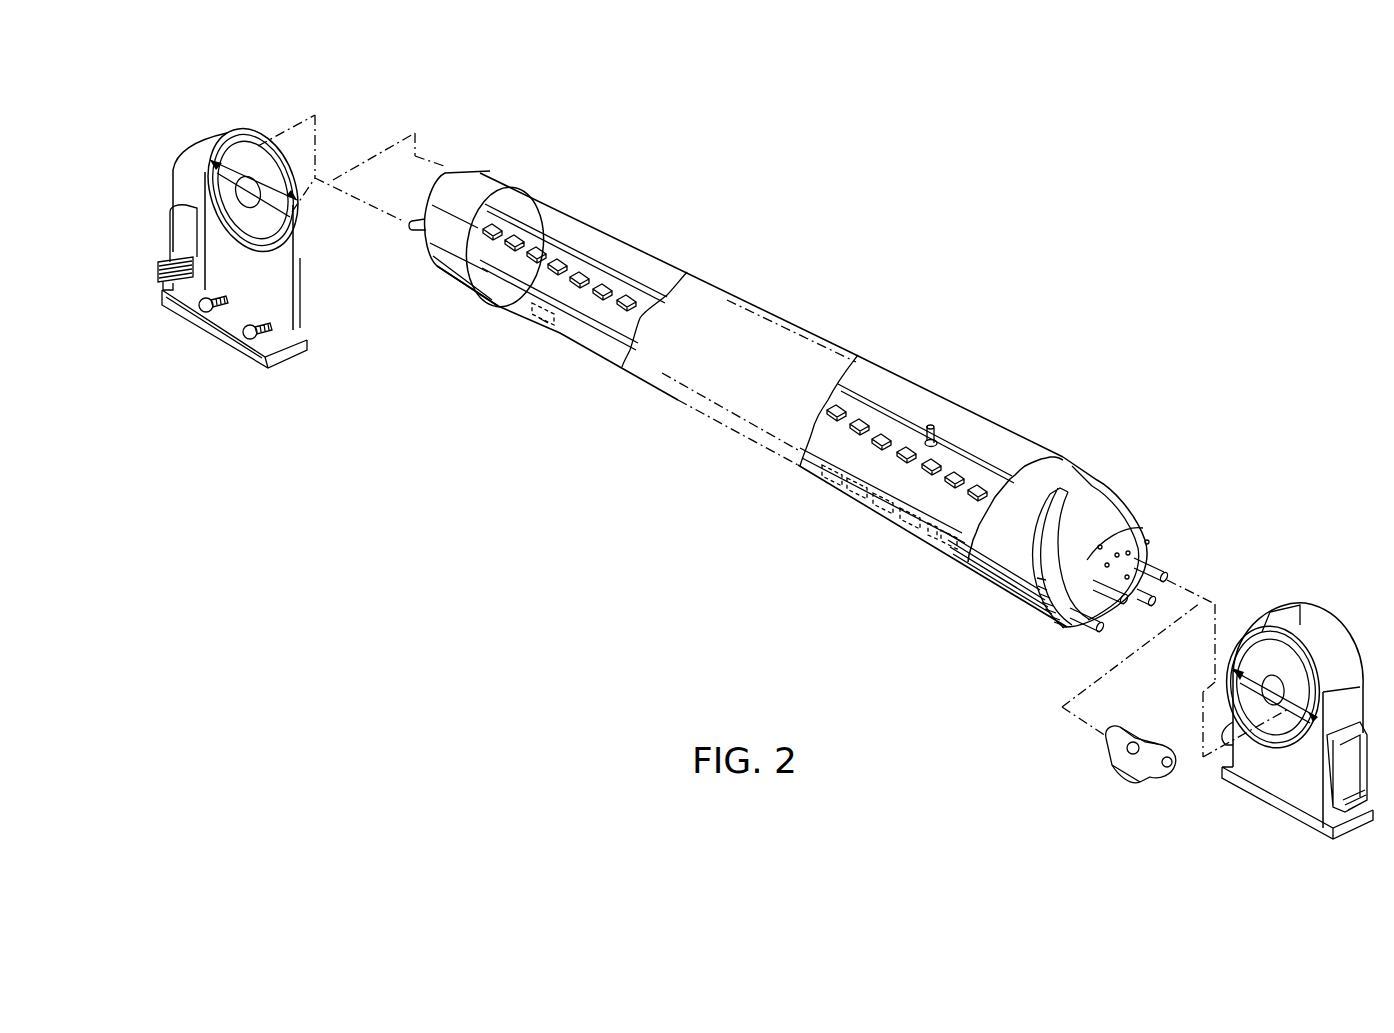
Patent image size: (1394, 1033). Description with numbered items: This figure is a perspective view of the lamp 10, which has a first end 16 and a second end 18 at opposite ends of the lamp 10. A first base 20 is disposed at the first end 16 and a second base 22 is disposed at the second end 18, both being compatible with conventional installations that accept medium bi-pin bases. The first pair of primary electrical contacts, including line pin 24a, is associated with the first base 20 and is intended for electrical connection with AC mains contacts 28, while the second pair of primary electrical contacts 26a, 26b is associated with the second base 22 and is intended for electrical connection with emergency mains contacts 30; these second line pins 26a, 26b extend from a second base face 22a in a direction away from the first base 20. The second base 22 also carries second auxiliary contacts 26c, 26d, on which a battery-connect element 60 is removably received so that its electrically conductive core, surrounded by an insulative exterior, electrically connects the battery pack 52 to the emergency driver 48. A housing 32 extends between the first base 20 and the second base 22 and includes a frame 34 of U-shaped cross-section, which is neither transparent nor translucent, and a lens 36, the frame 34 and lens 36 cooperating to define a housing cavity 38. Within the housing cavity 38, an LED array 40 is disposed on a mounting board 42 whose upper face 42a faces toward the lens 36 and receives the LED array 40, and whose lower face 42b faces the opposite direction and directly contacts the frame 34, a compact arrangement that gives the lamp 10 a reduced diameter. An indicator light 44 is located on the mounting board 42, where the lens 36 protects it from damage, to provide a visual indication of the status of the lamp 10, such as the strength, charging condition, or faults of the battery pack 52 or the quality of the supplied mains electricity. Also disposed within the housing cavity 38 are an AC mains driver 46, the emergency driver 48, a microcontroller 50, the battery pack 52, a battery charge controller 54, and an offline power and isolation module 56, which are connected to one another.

The lamp 10 is at (1186, 322).
The first end 16 is at (513, 259).
The second end 18 is at (842, 477).
The first base 20 is at (491, 184).
The second base 22 is at (1073, 476).
The second base face 22a is at (1145, 542).
The first pair of primary electrical contacts 24a is at (410, 225).
The second pair of primary electrical contacts 26a is at (1123, 600).
The second pair of primary electrical contacts 26b is at (1168, 577).
The second auxiliary contacts 26c is at (1091, 626).
The second auxiliary contacts 26d is at (1148, 594).
The AC mains contacts 28 is at (246, 366).
The emergency mains contacts 30 is at (1237, 808).
The housing 32 is at (832, 534).
The frame 34 is at (892, 514).
The lens 36 is at (663, 264).
The housing cavity 38 is at (572, 300).
The LED array 40 is at (589, 258).
The mounting board 42 is at (960, 517).
The upper face 42a is at (515, 270).
The lower face 42b is at (774, 506).
The indicator light 44 is at (931, 430).
The AC mains driver 46 is at (542, 322).
The emergency driver 48 is at (828, 482).
The microcontroller 50 is at (842, 496).
The battery pack 52 is at (873, 498).
The battery charge controller 54 is at (900, 520).
The offline power and isolation module 56 is at (950, 545).
The battery-connect element 60 is at (1098, 748).